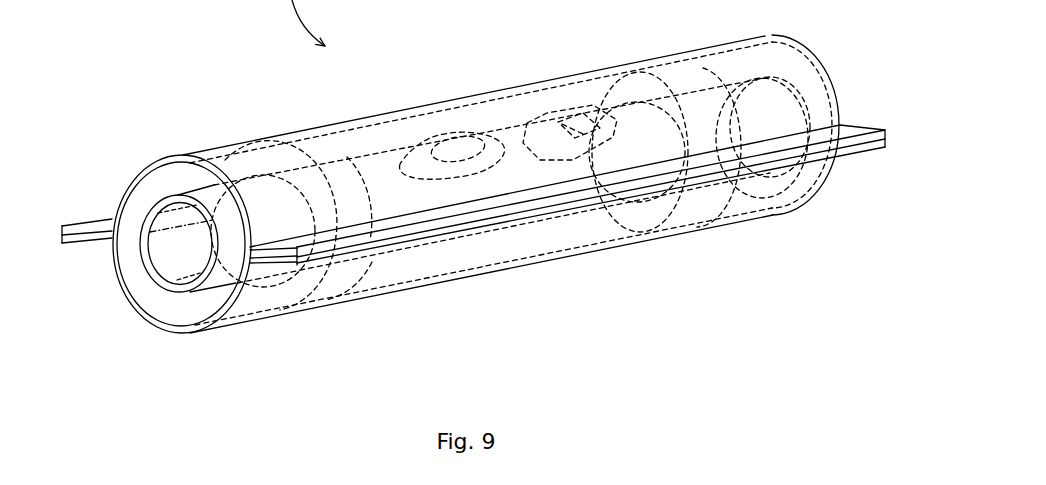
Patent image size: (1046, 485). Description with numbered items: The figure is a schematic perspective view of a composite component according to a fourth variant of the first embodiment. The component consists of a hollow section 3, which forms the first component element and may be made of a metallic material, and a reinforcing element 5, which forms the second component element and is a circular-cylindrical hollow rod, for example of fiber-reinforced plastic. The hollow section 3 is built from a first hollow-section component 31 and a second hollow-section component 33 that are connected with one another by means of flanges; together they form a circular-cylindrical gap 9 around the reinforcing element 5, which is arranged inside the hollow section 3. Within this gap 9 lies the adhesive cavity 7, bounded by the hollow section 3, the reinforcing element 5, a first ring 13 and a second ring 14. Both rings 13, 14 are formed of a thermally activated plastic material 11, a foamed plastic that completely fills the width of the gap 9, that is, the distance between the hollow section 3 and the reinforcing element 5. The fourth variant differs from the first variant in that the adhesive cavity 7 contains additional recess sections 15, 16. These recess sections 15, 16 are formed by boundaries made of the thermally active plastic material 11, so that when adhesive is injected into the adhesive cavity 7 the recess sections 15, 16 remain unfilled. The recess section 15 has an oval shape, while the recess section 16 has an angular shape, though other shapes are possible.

The hollow section 3 is at (122, 172).
The reinforcing element 5 is at (205, 272).
The adhesive cavity 7 is at (455, 147).
The gap 9 is at (197, 305).
The thermally activated plastic material 11 is at (302, 146).
The first ring 13 is at (330, 287).
The second ring 14 is at (698, 214).
The recess section 15 is at (417, 163).
The recess section 16 is at (577, 120).
The first hollow-section component 31 is at (113, 193).
The second hollow-section component 33 is at (118, 295).